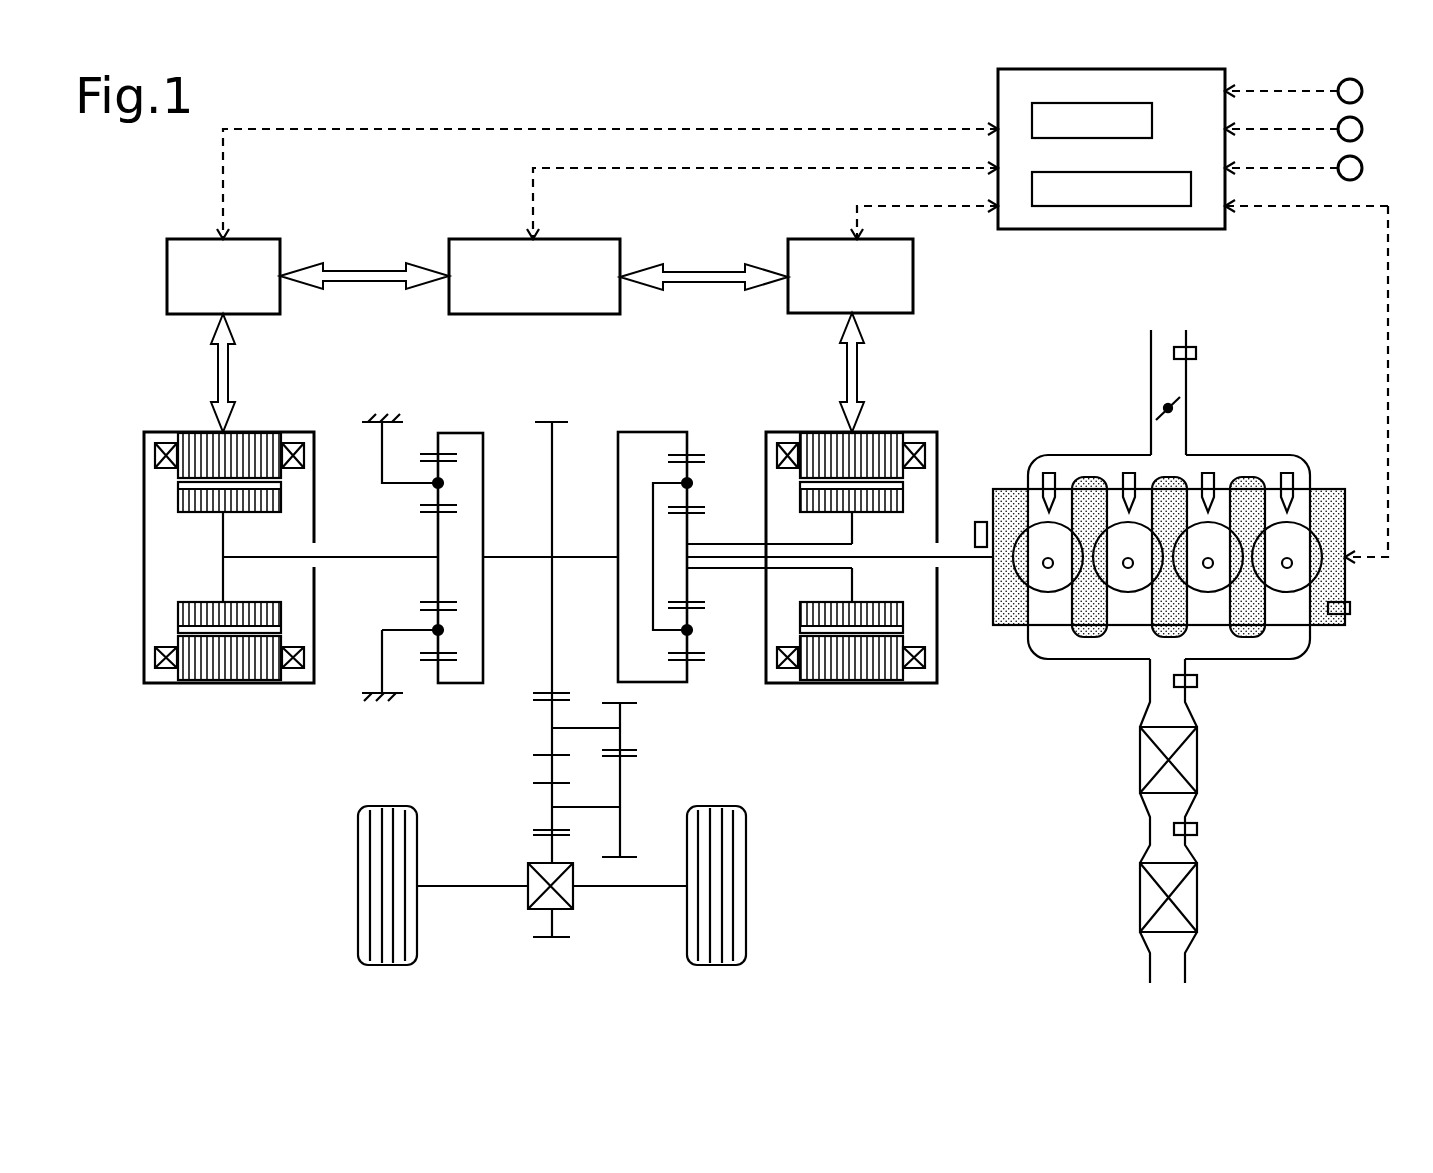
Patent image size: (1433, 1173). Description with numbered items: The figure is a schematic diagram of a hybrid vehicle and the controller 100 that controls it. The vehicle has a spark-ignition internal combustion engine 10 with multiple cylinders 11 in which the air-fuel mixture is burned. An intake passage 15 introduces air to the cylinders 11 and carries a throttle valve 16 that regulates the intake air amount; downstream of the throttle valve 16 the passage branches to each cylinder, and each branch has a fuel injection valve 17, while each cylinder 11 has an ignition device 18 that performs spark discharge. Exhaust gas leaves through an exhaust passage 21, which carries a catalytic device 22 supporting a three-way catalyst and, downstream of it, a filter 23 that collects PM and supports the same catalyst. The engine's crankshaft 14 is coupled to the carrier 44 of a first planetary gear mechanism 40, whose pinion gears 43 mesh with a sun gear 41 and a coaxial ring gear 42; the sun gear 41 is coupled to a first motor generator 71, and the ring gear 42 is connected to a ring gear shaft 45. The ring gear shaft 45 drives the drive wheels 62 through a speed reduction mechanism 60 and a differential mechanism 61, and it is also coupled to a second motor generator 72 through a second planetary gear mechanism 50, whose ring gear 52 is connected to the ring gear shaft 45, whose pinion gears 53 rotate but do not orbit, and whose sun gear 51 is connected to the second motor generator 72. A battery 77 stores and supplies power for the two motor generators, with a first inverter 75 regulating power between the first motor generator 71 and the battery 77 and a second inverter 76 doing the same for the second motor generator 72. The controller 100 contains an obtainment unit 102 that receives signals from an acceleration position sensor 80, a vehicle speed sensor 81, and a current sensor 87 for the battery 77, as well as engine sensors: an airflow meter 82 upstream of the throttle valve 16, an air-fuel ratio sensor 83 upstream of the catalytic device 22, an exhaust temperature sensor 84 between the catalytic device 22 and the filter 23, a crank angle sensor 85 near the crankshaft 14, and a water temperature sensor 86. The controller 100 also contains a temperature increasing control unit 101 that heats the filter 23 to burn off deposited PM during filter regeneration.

The internal combustion engine 10 is at (1023, 414).
The cylinder 11 is at (1061, 552).
The crankshaft 14 is at (965, 565).
The intake passage 15 is at (1150, 377).
The throttle valve 16 is at (1182, 403).
The fuel injection valve 17 is at (1128, 471).
The ignition device 18 is at (1048, 568).
The exhaust passage 21 is at (1150, 830).
The catalytic device 22 is at (1185, 760).
The filter 23 is at (1190, 898).
The first planetary gear mechanism 40 is at (629, 401).
The sun gear 41 is at (690, 590).
The ring gear 42 is at (690, 440).
The pinion gear 43 is at (690, 495).
The carrier 44 is at (652, 574).
The ring gear shaft 45 is at (590, 555).
The second planetary gear mechanism 50 is at (475, 399).
The sun gear 51 is at (437, 586).
The ring gear 52 is at (437, 440).
The pinion gear 53 is at (437, 495).
The speed reduction mechanism 60 is at (512, 750).
The differential mechanism 61 is at (527, 898).
The drive wheel 62 is at (357, 852).
The first motor generator 71 is at (783, 430).
The second motor generator 72 is at (165, 430).
The first inverter 75 is at (818, 237).
The second inverter 76 is at (183, 237).
The battery 77 is at (480, 237).
The acceleration position sensor 80 is at (1362, 129).
The vehicle speed sensor 81 is at (1362, 168).
The airflow meter 82 is at (1196, 353).
The air-fuel ratio sensor 83 is at (1197, 680).
The exhaust temperature sensor 84 is at (1197, 830).
The crank angle sensor 85 is at (980, 520).
The water temperature sensor 86 is at (1350, 608).
The current sensor 87 is at (1362, 91).
The controller 100 is at (1040, 231).
The temperature increasing control unit 101 is at (1120, 170).
The obtainment unit 102 is at (1120, 102).